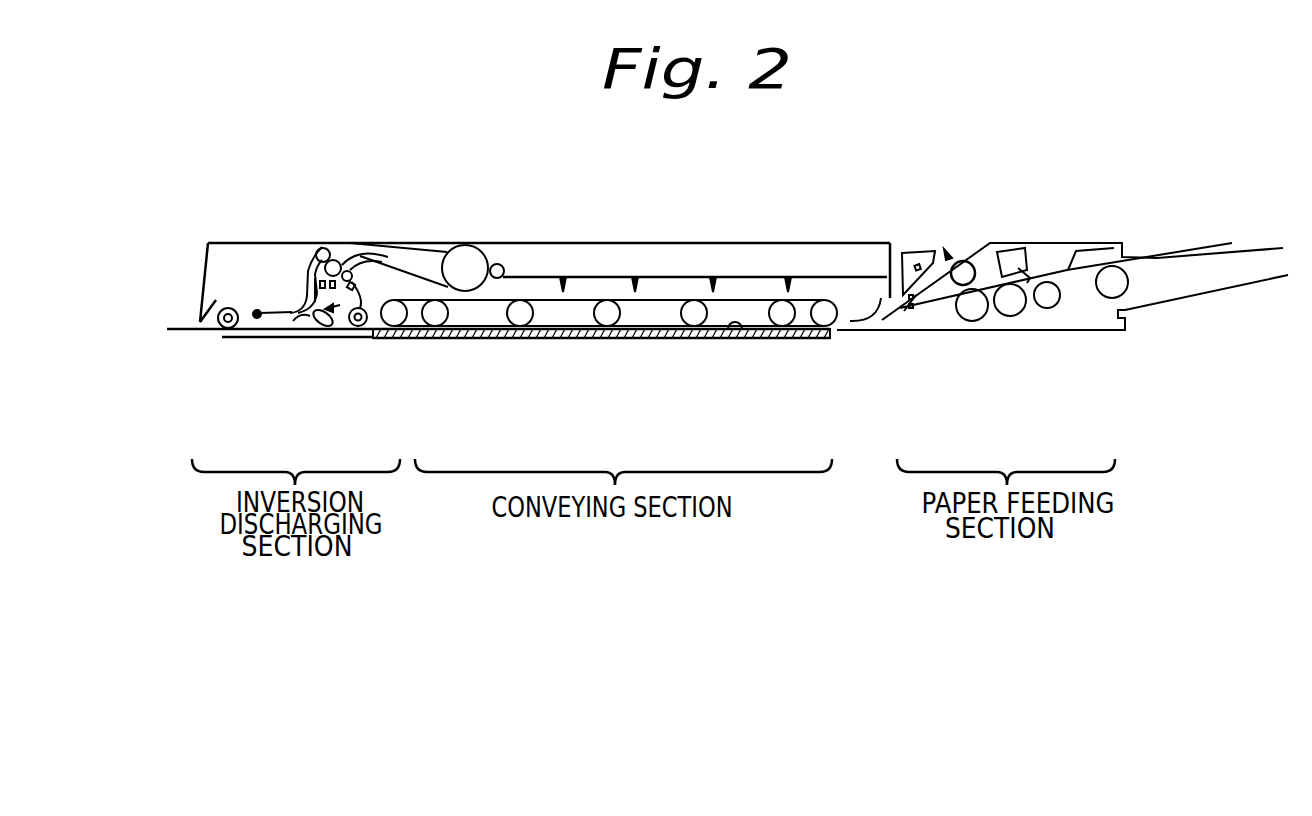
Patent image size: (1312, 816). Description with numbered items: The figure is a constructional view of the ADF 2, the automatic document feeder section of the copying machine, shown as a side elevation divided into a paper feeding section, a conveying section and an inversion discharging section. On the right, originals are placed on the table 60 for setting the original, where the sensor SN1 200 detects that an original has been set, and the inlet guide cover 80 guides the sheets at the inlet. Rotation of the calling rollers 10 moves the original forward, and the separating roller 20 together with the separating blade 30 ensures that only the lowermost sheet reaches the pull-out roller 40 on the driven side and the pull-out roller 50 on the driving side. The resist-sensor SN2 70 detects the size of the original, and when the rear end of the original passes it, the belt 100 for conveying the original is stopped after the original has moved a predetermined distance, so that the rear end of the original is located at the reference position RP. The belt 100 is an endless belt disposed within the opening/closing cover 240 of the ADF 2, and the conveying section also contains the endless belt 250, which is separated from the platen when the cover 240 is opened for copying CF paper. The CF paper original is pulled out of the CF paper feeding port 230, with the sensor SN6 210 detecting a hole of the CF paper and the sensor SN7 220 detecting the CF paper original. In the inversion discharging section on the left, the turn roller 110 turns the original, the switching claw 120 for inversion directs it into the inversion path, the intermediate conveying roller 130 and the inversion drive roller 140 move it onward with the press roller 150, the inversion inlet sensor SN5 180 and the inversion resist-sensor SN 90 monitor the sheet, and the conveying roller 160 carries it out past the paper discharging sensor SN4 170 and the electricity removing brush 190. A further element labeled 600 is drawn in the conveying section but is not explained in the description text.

The ADF 2 is at (772, 215).
The calling rollers 10 is at (1112, 288).
The separating roller 20 is at (1012, 305).
The separating blade 30 is at (1015, 250).
The pull-out roller on a driven side 40 is at (972, 315).
The pull-out roller on a driving side 50 is at (962, 260).
The table for setting the original 60 is at (1150, 258).
The resist-sensor SN2 70 is at (913, 312).
The inlet guide cover 80 is at (1080, 250).
The inversion resist-sensor SN 90 is at (386, 255).
The belt for conveying the original 100 is at (742, 340).
The turn roller 110 is at (467, 262).
The switching claw for inversion 120 is at (315, 334).
The intermediate conveying roller 130 is at (358, 334).
The inversion drive roller 140 is at (337, 259).
The press roller 150 is at (525, 310).
The conveying roller 160 is at (232, 306).
The paper discharging sensor SN4 170 is at (257, 318).
The inversion inlet sensor SN5 180 is at (318, 249).
The electricity removing brush 190 is at (198, 306).
The sensor SN1 for setting the original 200 is at (1050, 285).
The sensor SN6 for detecting a hole of the CF paper 210 is at (916, 244).
The sensor SN7 for detecting the CF paper original 220 is at (901, 231).
The port for feeding the CF paper original 230 is at (947, 250).
The opening/closing cover 240 is at (598, 243).
The endless belt 250 is at (683, 296).
The conveyor belt plate 600 is at (510, 345).
The reference position of the original RP is at (800, 345).